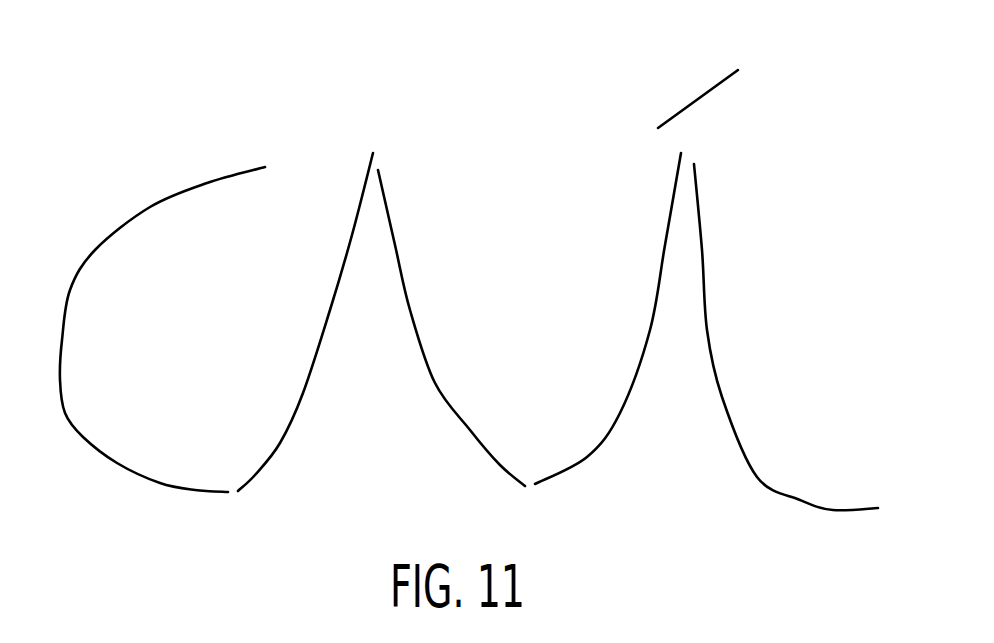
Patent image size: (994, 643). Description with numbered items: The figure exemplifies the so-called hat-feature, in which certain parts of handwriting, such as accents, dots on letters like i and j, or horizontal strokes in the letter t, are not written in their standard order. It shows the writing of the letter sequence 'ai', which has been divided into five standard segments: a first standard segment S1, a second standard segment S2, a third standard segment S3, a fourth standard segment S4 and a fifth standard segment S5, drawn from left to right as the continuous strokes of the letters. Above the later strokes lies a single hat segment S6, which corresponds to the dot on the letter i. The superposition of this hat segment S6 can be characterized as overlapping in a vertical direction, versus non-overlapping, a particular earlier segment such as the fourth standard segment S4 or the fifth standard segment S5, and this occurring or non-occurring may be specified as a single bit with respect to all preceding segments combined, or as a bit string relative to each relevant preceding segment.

The first standard segment S1 is at (162, 350).
The second standard segment S2 is at (305, 343).
The third standard segment S3 is at (451, 352).
The fourth standard segment S4 is at (608, 343).
The fifth standard segment S5 is at (786, 349).
The hat segment S6 is at (698, 81).